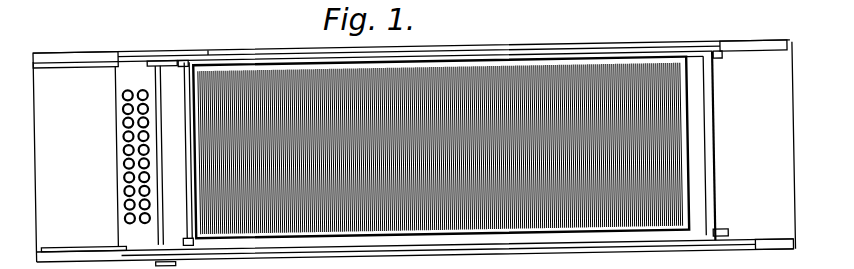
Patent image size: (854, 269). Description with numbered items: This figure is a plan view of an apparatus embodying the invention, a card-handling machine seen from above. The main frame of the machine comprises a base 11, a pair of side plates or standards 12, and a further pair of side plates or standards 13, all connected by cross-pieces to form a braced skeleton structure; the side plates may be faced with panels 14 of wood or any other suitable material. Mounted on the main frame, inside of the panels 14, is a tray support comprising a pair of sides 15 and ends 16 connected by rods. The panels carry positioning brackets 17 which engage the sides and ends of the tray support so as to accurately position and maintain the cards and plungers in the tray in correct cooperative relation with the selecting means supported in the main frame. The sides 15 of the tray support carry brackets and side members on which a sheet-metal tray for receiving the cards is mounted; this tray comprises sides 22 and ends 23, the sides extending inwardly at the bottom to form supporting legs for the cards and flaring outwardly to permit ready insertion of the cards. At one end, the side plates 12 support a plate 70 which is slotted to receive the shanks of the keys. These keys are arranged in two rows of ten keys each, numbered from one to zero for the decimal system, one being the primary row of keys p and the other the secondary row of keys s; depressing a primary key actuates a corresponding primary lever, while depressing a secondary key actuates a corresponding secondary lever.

The base 11 is at (29, 62).
The side plates or standards 12 is at (167, 63).
The side plates or standards 13 is at (762, 51).
The panels 14 is at (485, 44).
The sides 15 is at (543, 56).
The ends 16 is at (193, 172).
The positioning brackets 17 is at (722, 59).
The sides 22 is at (617, 64).
The ends 23 is at (196, 131).
The plate 70 is at (117, 166).
The primary row of keys p is at (126, 146).
The secondary row of keys s is at (144, 146).